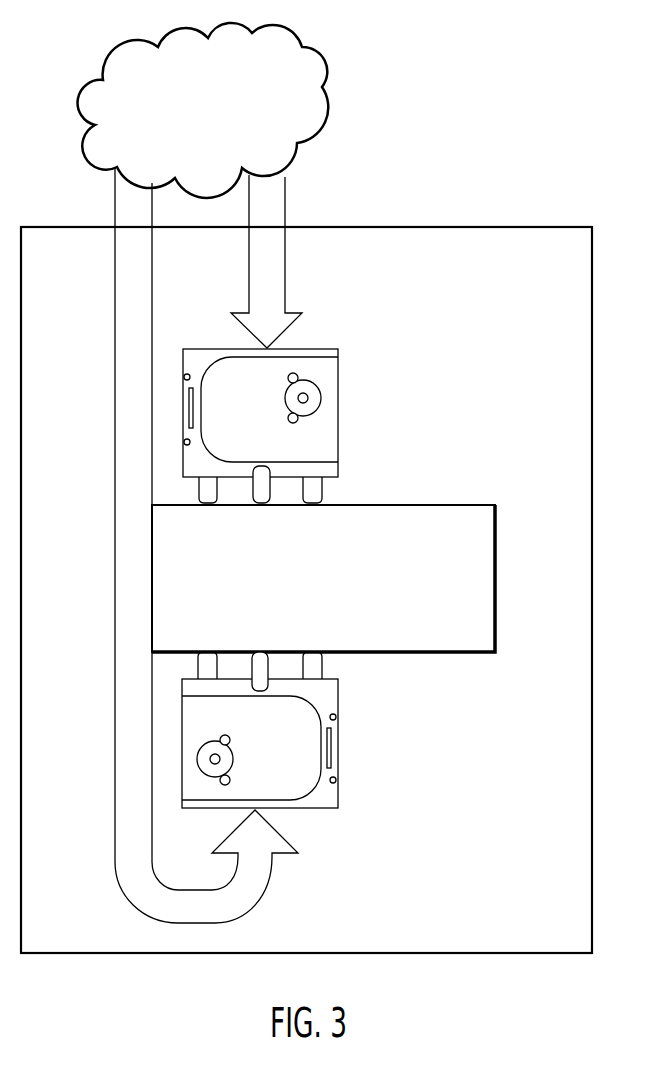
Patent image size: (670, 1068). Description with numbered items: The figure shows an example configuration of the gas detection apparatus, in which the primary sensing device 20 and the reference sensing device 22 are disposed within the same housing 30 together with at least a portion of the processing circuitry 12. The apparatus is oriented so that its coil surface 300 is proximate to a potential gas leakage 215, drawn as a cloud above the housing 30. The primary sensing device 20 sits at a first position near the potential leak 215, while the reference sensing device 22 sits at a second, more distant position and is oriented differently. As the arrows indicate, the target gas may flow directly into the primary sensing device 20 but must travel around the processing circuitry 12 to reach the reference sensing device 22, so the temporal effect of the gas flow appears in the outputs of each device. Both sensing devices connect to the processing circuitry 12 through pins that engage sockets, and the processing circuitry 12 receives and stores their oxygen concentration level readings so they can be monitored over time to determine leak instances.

The coil surface 300 is at (328, 487).
The gas leakage 215 is at (105, 62).
The housing 30 is at (592, 388).
The primary sensing device 20 is at (338, 390).
The processing circuitry 12 is at (495, 553).
The reference sensing device 22 is at (338, 745).